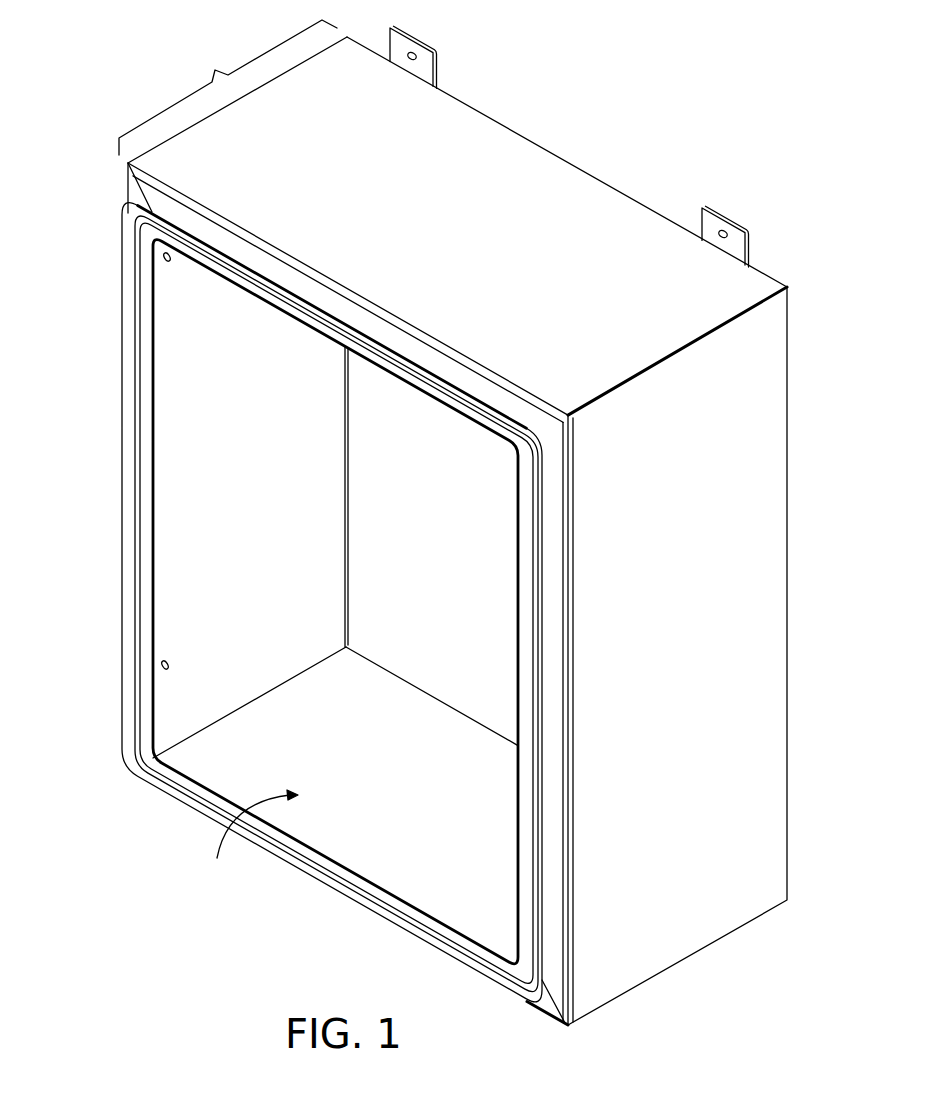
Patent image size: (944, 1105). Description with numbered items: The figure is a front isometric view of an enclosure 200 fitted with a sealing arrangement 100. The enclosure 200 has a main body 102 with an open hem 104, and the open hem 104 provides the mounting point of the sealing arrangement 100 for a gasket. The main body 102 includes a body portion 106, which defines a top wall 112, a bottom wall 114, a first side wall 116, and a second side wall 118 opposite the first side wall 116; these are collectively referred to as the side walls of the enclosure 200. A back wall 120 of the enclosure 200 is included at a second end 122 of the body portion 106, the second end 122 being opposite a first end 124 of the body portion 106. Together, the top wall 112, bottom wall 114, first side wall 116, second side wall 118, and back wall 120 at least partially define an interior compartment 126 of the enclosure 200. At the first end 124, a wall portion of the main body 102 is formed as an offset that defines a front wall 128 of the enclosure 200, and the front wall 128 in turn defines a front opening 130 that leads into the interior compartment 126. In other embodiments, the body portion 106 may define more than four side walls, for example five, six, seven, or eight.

The sealing arrangement 100 is at (78, 129).
The main body 102 is at (341, 221).
The open hem 104 is at (125, 250).
The body portion 106 is at (450, 133).
The top wall 112 is at (617, 228).
The bottom wall 114 is at (400, 873).
The first side wall 116 is at (735, 923).
The second side wall 118 is at (165, 445).
The back wall 120 is at (442, 687).
The second end 122 is at (563, 158).
The first end 124 is at (350, 288).
The interior compartment 126 is at (249, 839).
The front wall 128 is at (555, 892).
The front opening 130 is at (195, 787).
The enclosure 200 is at (774, 264).